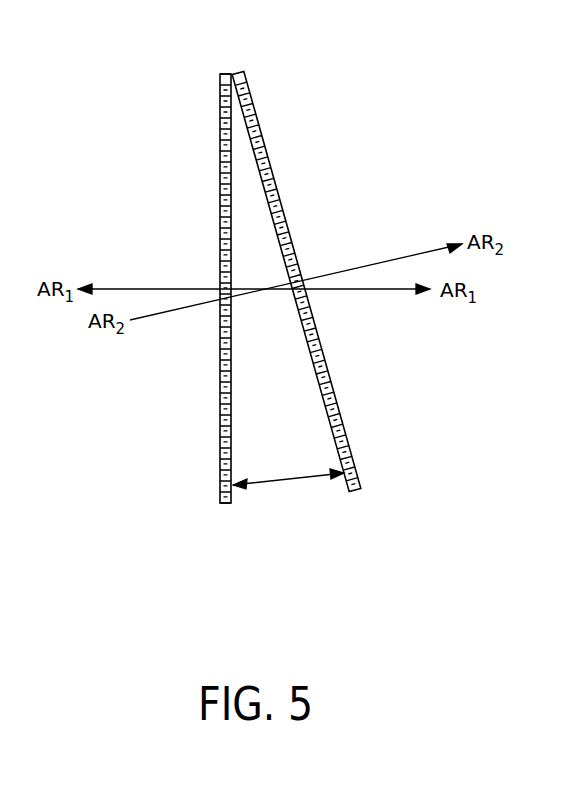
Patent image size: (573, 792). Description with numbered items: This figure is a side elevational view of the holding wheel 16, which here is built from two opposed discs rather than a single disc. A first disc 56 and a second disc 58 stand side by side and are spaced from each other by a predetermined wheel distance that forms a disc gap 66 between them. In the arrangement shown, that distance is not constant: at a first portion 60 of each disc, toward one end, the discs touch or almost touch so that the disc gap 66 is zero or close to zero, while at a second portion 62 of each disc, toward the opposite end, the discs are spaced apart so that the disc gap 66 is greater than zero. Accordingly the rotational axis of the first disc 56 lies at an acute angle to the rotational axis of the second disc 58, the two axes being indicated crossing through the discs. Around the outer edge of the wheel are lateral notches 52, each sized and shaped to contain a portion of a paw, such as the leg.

The holding wheel 16 is at (355, 562).
The lateral notches 52 is at (272, 193).
The first disc 56 is at (220, 201).
The second disc 58 is at (267, 146).
The first portion 60 is at (231, 73).
The second portion 62 is at (225, 505).
The disc gap 66 is at (299, 480).